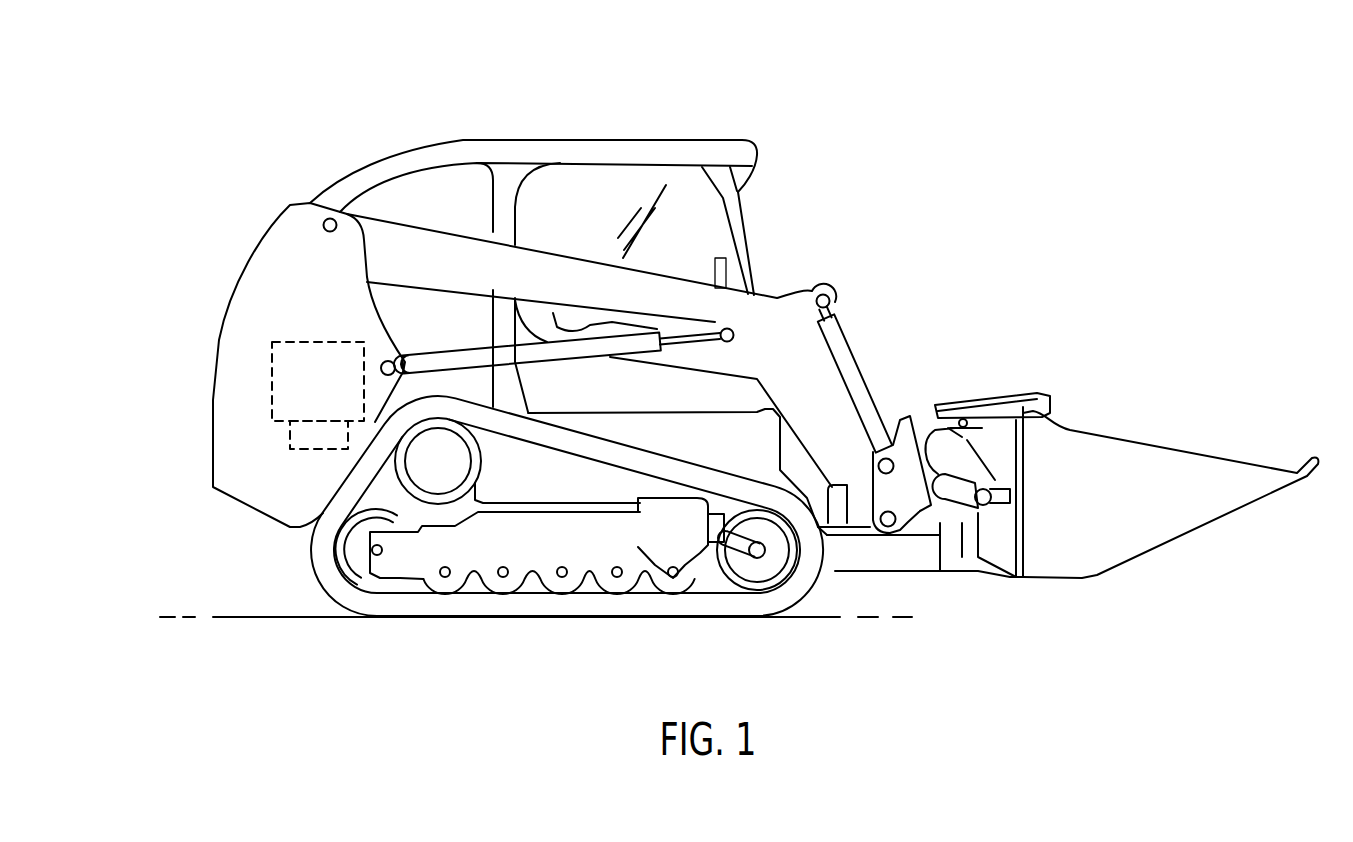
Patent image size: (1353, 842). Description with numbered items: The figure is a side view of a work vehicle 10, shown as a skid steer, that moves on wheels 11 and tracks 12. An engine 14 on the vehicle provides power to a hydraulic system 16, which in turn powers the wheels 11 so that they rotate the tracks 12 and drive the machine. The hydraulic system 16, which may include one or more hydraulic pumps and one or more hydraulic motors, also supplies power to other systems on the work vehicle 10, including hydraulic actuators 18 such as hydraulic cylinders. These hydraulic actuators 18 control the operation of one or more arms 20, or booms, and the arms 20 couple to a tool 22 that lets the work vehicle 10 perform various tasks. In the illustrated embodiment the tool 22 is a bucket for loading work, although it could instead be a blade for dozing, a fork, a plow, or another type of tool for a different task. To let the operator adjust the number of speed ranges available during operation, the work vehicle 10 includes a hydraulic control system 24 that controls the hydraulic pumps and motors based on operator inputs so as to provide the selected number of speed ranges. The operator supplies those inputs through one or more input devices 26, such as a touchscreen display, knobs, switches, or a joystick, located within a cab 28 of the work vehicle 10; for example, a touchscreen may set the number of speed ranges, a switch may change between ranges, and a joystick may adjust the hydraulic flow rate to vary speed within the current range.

The work vehicle 10 is at (986, 119).
The wheels 11 is at (358, 562).
The tracks 12 is at (536, 580).
The engine 14 is at (239, 521).
The hydraulic system 16 is at (298, 343).
The hydraulic actuators 18 is at (485, 355).
The arms 20 is at (776, 297).
The tool 22 is at (1106, 474).
The hydraulic control system 24 is at (290, 436).
The input devices 26 is at (721, 257).
The cab 28 is at (698, 152).